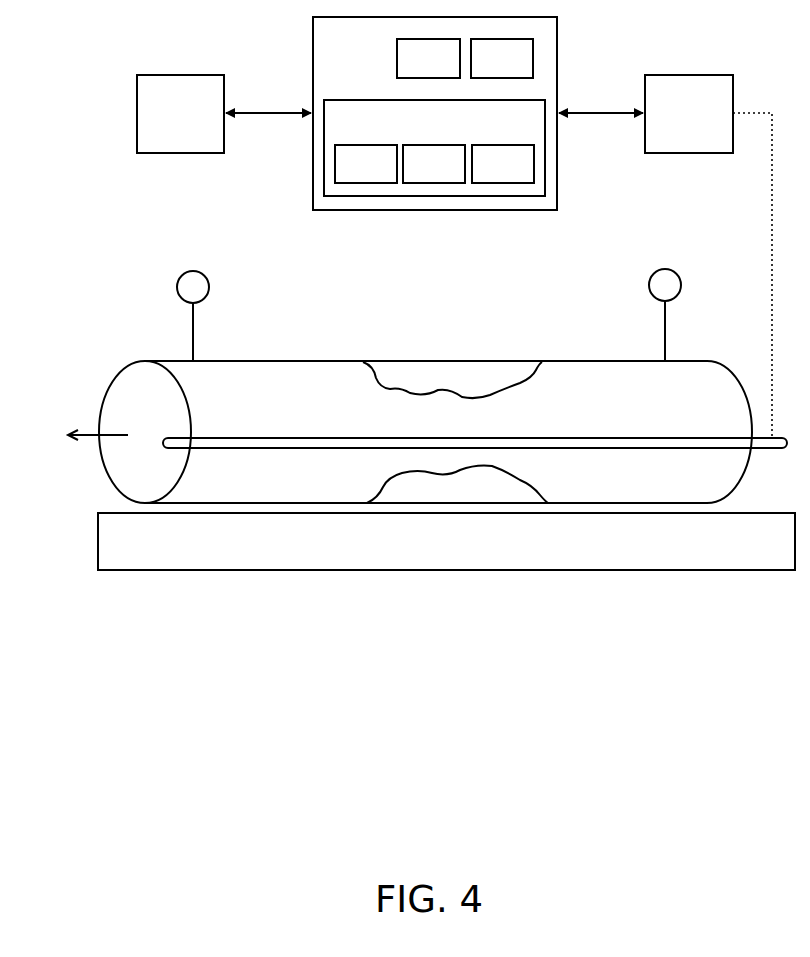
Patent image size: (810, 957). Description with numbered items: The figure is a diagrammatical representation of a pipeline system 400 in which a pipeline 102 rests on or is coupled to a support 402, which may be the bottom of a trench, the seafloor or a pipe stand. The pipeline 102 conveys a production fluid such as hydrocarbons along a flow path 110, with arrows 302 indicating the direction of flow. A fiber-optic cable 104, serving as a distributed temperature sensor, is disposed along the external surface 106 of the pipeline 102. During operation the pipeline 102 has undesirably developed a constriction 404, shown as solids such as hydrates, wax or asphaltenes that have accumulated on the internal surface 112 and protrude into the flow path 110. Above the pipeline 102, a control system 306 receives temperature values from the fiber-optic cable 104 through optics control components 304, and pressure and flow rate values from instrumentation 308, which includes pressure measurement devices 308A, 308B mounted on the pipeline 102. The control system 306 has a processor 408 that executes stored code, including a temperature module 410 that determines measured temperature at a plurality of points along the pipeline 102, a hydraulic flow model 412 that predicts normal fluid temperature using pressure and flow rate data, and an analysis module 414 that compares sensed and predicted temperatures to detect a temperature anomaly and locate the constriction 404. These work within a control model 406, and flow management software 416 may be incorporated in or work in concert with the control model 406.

The pipeline system 400 is at (406, 870).
The pipeline 102 is at (268, 426).
The fiber-optic cable 104 is at (663, 437).
The external surface 106 is at (317, 361).
The flow path 110 is at (135, 470).
The internal surface 112 is at (593, 362).
The arrows 302 is at (86, 435).
The optics control components 304 is at (669, 126).
The control system 306 is at (371, 51).
The instrumentation 308 is at (160, 126).
The pressure measurement device 308A is at (185, 273).
The pressure measurement device 308B is at (653, 273).
The support 402 is at (250, 553).
The constriction 404 is at (442, 372).
The control model 406 is at (380, 132).
The processor 408 is at (482, 72).
The temperature module 410 is at (346, 178).
The hydraulic flow model 412 is at (414, 178).
The analysis module 414 is at (483, 178).
The flow management software 416 is at (408, 72).